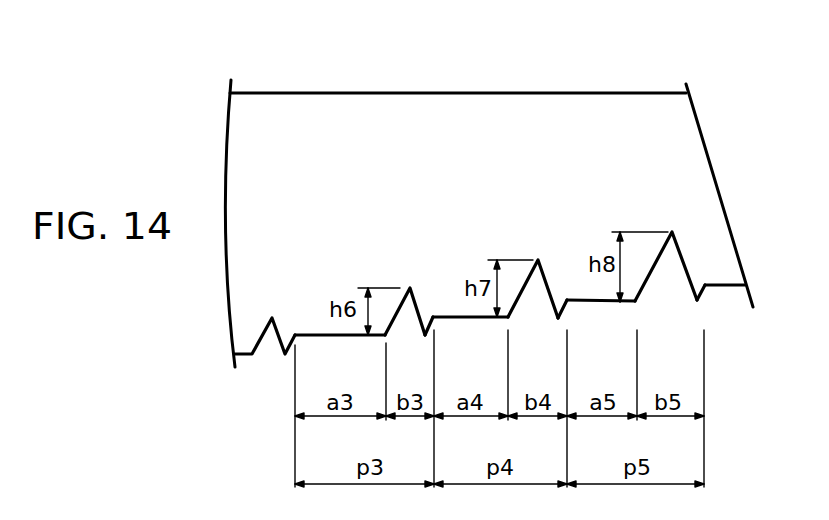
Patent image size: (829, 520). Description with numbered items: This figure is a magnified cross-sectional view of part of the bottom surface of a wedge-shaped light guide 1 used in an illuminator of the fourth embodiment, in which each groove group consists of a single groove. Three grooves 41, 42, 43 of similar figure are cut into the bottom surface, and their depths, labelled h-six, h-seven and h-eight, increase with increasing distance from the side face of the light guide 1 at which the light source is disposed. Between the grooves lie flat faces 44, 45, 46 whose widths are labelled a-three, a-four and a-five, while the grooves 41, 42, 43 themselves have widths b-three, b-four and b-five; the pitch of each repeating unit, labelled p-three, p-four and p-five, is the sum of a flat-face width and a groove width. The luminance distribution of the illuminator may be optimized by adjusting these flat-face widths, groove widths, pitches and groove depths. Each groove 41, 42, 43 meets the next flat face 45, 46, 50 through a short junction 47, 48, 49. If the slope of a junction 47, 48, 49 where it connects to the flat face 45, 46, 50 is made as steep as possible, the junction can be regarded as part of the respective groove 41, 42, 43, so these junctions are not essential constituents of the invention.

The light guide 1 is at (322, 92).
The groove 41 is at (405, 313).
The groove 42 is at (535, 290).
The groove 43 is at (672, 258).
The flat face 44 is at (315, 333).
The flat face 45 is at (470, 315).
The flat face 46 is at (585, 298).
The junction 47 is at (427, 317).
The junction 48 is at (562, 295).
The junction 49 is at (697, 283).
The flat face 50 is at (725, 282).